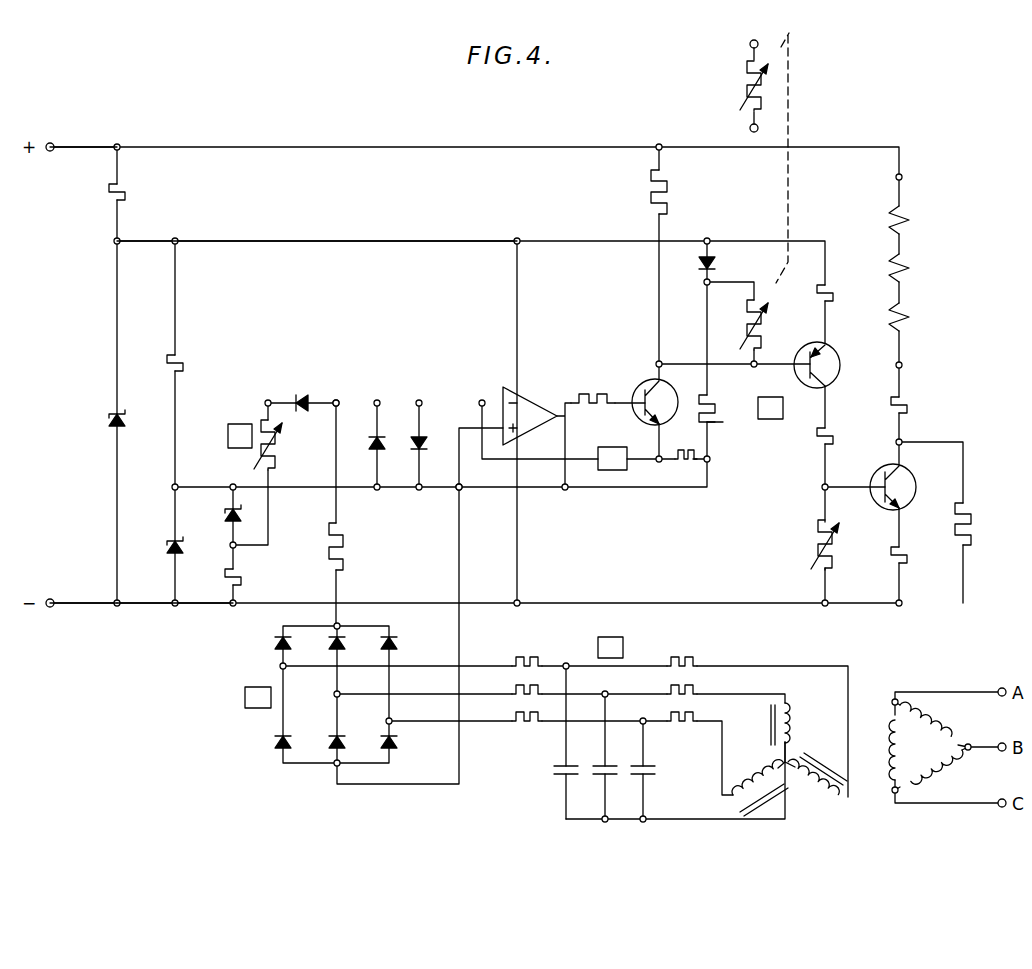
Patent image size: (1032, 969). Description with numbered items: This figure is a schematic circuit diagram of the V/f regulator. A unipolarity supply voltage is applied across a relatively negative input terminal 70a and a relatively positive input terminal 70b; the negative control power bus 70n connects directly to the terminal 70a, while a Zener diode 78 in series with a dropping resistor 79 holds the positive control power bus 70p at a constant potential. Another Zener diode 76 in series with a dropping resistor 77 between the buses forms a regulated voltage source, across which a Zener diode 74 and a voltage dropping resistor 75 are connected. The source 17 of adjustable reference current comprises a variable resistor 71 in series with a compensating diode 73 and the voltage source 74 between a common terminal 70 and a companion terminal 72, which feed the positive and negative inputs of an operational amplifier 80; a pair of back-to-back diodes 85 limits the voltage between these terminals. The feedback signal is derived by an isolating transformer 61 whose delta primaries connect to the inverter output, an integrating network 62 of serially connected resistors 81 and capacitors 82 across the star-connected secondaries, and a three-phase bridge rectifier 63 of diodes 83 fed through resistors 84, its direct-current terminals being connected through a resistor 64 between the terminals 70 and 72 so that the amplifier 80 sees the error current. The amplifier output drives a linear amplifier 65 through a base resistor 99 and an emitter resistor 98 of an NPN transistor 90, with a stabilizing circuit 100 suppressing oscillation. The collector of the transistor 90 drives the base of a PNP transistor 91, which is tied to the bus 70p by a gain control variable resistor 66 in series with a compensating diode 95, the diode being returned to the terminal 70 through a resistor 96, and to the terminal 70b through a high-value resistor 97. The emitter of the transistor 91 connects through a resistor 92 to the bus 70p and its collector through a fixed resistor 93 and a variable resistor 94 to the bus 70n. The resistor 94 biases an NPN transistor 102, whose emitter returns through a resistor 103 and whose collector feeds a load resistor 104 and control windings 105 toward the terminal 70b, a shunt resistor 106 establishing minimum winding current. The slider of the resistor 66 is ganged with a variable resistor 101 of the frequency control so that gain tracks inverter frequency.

The positive input terminal 70b is at (54, 146).
The positive control power bus 70p is at (152, 240).
The input terminal 70a is at (50, 608).
The negative control power bus 70n is at (148, 606).
The terminal 70 is at (456, 491).
The dropping resistor 79 is at (108, 188).
The dropping resistor 77 is at (184, 366).
The Zener diode 78 is at (108, 424).
The source of regulated voltage 76 is at (165, 552).
The regulated unipolarity voltage source 74 is at (226, 520).
The voltage dropping resistor 75 is at (243, 578).
The source of adjustable reference current 17 is at (240, 436).
The variable resistor 71 is at (277, 468).
The compensating diode 73 is at (302, 396).
The terminal 72 is at (340, 400).
The back-to-back diodes 85 is at (416, 441).
The resistor 64 is at (346, 550).
The operational amplifier 80 is at (540, 400).
The base resistor 99 is at (596, 397).
The NPN transistor 90 is at (643, 388).
The stabilizing circuit 100 is at (609, 446).
The emitter resistor 98 is at (684, 452).
The resistor 96 is at (716, 430).
The linear amplifier 65 is at (770, 408).
The resistor 97 is at (668, 195).
The compensating diode 95 is at (716, 263).
The gain control variable resistor 66 is at (766, 331).
The resistor 92 is at (835, 298).
The PNP transistor 91 is at (838, 358).
The fixed resistor 93 is at (835, 438).
The variable resistor 94 is at (836, 567).
The NPN transistor 102 is at (912, 478).
The load resistor 104 is at (907, 406).
The resistor 103 is at (908, 561).
The resistor 106 is at (970, 515).
The control windings 105 is at (914, 221).
The variable resistor 101 is at (745, 86).
The diodes 83 is at (330, 645).
The 3-phase full-wave bridge type rectifier 63 is at (258, 697).
The resistor 84 is at (515, 658).
The integrating network 62 is at (610, 647).
The resistors 81 is at (690, 659).
The capacitors 82 is at (560, 776).
The isolating transformer 61 is at (796, 767).